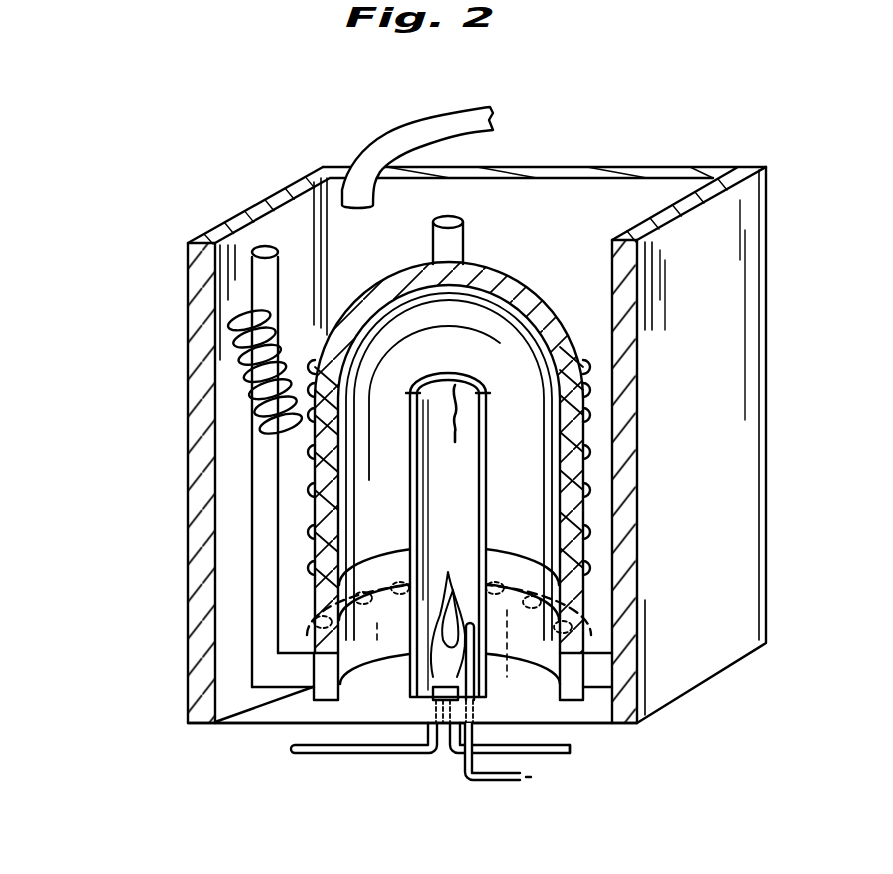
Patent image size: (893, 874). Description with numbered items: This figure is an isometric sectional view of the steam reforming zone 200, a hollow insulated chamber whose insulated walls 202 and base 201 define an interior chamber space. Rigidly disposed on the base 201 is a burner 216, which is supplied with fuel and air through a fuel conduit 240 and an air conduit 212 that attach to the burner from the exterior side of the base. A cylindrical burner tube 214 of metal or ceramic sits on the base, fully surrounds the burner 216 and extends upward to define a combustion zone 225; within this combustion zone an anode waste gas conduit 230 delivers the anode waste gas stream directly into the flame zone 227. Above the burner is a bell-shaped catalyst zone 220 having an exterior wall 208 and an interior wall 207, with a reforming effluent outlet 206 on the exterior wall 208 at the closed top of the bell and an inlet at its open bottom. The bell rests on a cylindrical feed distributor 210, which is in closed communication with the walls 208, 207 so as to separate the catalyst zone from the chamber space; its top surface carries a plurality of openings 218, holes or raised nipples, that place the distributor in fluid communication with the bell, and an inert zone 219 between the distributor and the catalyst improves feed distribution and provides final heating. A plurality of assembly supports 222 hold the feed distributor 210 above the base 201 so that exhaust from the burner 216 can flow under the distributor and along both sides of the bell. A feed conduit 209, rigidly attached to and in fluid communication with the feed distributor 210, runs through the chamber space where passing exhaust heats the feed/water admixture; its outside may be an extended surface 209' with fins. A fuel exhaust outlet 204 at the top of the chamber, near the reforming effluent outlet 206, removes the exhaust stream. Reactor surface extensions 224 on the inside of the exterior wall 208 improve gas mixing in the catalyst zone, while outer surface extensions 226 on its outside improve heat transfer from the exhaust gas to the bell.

The steam reforming zone 200 is at (189, 379).
The base 201 is at (222, 727).
The insulated walls 202 is at (263, 204).
The fuel exhaust outlet 204 is at (425, 128).
The reforming effluent outlet 206 is at (462, 222).
The interior wall 207 is at (592, 348).
The exterior wall 208 is at (499, 270).
The feed conduit 209 is at (323, 457).
The extended surface 209' is at (205, 375).
The feed distributor 210 is at (312, 692).
The air conduit 212 is at (352, 758).
The burner tube 214 is at (487, 420).
The burner 216 is at (432, 700).
The openings 218 is at (482, 680).
The inert zone 219 is at (580, 610).
The bell-shaped catalyst zone 220 is at (573, 486).
The assembly supports 222 is at (597, 672).
The reactor surface extensions 224 is at (575, 452).
The combustion zone 225 is at (455, 386).
The outer surface extensions 226 is at (638, 542).
The flame zone 227 is at (450, 572).
The anode waste gas conduit 230 is at (498, 782).
The fuel conduit 240 is at (551, 757).